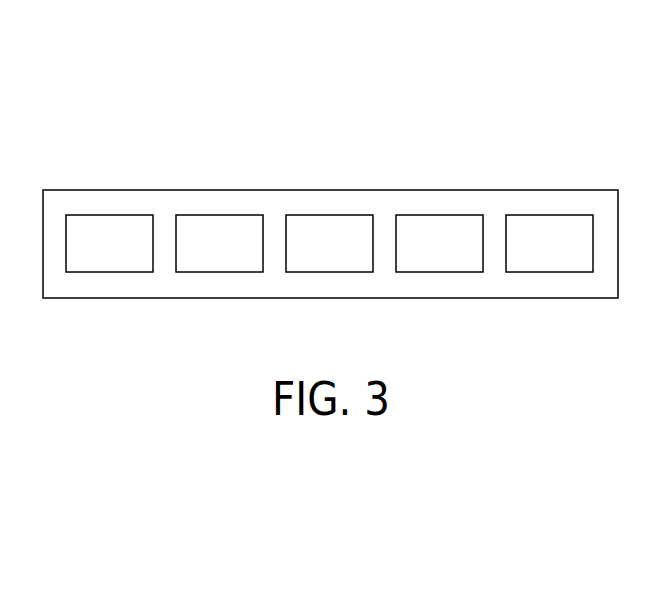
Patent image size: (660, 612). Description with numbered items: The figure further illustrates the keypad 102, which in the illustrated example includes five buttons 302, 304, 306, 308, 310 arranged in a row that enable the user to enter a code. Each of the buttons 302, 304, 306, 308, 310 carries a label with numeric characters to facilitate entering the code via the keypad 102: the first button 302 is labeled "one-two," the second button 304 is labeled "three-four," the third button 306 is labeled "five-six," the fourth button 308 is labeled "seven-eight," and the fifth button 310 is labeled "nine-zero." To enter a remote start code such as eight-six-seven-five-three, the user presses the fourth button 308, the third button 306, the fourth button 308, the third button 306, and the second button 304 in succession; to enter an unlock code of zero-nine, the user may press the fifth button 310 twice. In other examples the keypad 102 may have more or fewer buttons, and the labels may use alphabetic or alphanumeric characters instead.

The keypad 102 is at (434, 86).
The first button 302 is at (107, 215).
The second button 304 is at (220, 215).
The third button 306 is at (329, 215).
The fourth button 308 is at (438, 215).
The fifth button 310 is at (548, 215).